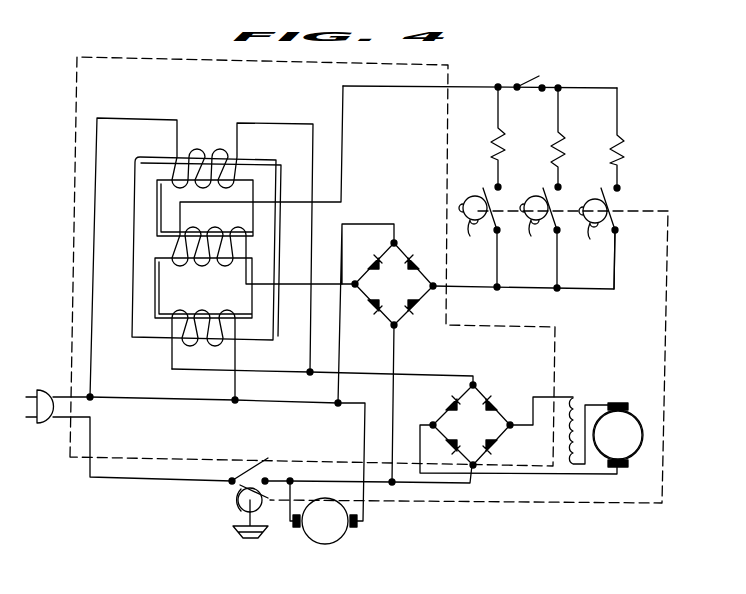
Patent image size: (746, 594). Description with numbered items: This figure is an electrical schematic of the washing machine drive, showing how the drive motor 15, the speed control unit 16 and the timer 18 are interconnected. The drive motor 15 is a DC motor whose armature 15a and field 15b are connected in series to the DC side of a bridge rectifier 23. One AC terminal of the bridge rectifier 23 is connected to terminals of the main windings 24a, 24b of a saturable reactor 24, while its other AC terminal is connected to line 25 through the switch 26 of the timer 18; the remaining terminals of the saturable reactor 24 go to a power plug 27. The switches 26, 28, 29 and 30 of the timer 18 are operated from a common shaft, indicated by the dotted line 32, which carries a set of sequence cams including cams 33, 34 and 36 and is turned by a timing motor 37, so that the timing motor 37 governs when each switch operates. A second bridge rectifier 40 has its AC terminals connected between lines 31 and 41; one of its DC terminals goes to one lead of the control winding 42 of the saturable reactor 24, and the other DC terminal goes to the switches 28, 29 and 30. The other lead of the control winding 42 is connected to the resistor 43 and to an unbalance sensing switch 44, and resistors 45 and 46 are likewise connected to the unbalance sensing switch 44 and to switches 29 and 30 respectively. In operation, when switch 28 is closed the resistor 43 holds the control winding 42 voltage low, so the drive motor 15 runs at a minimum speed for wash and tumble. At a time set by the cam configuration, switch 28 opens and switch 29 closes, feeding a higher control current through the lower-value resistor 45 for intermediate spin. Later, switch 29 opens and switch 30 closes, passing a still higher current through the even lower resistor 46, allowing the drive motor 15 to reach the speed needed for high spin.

The drive motor 15 is at (612, 387).
The armature 15a is at (636, 416).
The field 15b is at (575, 398).
The speed control unit 16 is at (417, 66).
The timer 18 is at (246, 540).
The bridge rectifier 23 is at (498, 420).
The saturable reactor 24 is at (253, 158).
The main winding 24a is at (203, 307).
The main winding 24b is at (205, 150).
The line 25 is at (168, 485).
The switch 26 is at (266, 463).
The power plug 27 is at (44, 390).
The switch 28 is at (493, 200).
The switch 29 is at (552, 204).
The switch 30 is at (611, 205).
The line 31 is at (242, 410).
The common shaft 32 is at (667, 272).
The sequence cam 33 is at (237, 505).
The sequence cam 34 is at (473, 223).
The sequence cam 36 is at (563, 223).
The timing motor 37 is at (308, 540).
The bridge rectifier 40 is at (425, 282).
The line 41 is at (322, 480).
The control winding 42 is at (226, 224).
The resistor 43 is at (492, 136).
The unbalance sensing switch 44 is at (534, 75).
The resistor 45 is at (552, 150).
The resistor 46 is at (611, 146).